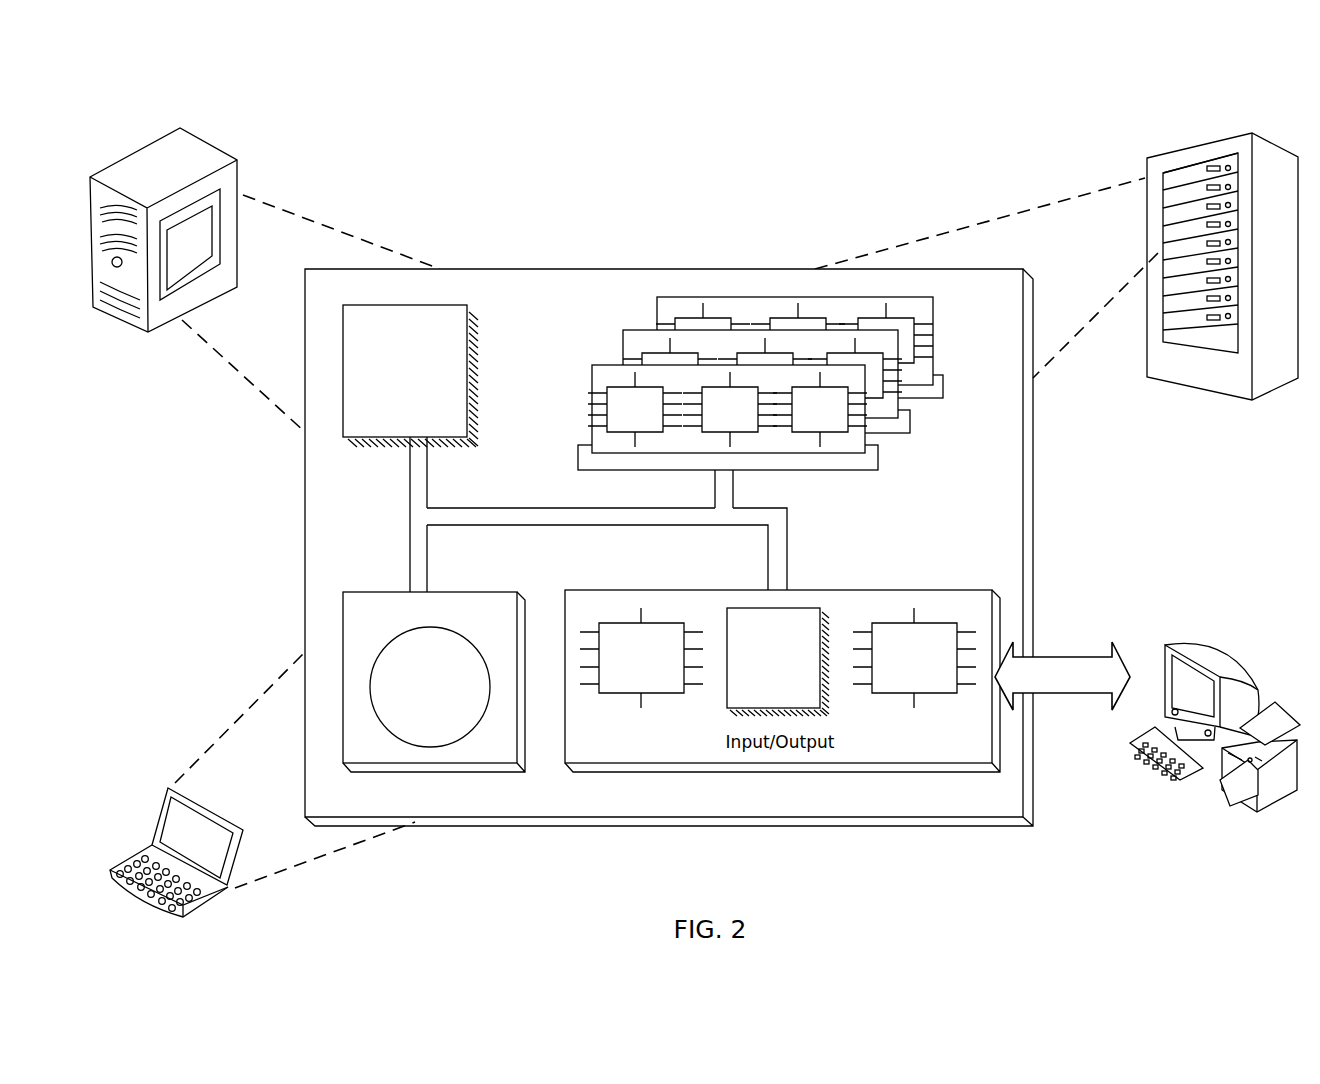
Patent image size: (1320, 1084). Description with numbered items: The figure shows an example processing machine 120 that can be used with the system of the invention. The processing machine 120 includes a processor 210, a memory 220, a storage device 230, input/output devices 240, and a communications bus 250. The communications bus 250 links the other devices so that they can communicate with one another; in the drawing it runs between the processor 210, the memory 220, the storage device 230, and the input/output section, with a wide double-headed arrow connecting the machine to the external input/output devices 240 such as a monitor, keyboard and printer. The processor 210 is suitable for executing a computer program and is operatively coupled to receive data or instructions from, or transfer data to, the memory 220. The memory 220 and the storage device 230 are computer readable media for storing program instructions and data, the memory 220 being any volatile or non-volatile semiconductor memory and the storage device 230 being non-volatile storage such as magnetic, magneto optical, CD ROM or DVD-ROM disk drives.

The processing machine 120 is at (489, 149).
The processor 210 is at (410, 376).
The memory 220 is at (937, 429).
The storage device 230 is at (434, 682).
The input/output devices 240 is at (1160, 647).
The communications bus 250 is at (600, 526).